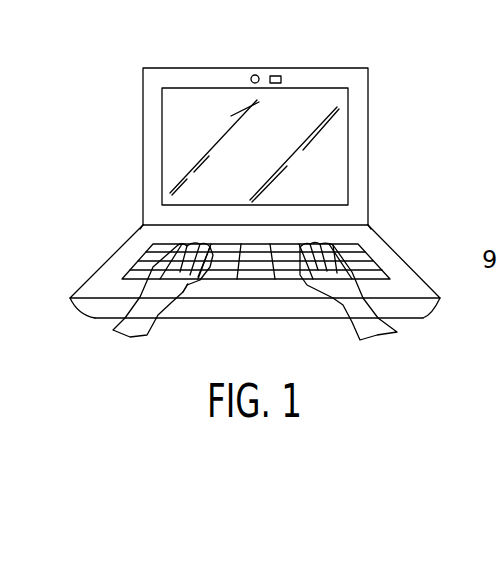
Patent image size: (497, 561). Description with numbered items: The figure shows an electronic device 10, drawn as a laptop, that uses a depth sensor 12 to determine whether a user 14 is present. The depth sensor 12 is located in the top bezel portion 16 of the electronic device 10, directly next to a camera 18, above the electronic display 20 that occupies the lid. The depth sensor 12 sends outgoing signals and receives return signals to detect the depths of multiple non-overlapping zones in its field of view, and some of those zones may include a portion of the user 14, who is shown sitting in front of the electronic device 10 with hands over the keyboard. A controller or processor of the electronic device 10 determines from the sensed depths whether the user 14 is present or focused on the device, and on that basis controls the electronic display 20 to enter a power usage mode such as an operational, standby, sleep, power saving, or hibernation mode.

The electronic device 10 is at (107, 101).
The depth sensor 12 is at (275, 74).
The user 14 is at (135, 323).
The top bezel portion 16 is at (323, 72).
The camera 18 is at (251, 73).
The electronic display 20 is at (330, 158).